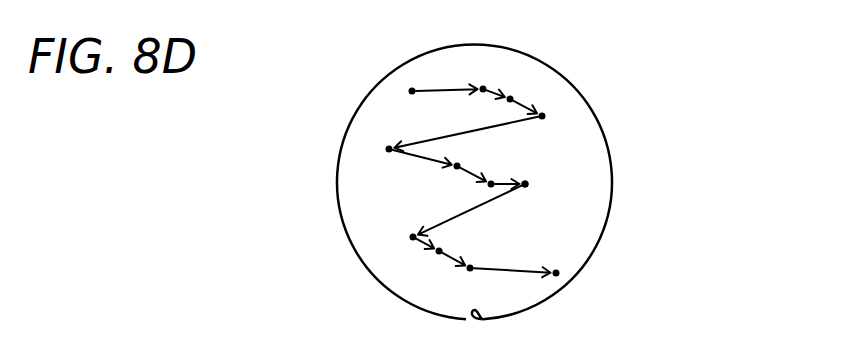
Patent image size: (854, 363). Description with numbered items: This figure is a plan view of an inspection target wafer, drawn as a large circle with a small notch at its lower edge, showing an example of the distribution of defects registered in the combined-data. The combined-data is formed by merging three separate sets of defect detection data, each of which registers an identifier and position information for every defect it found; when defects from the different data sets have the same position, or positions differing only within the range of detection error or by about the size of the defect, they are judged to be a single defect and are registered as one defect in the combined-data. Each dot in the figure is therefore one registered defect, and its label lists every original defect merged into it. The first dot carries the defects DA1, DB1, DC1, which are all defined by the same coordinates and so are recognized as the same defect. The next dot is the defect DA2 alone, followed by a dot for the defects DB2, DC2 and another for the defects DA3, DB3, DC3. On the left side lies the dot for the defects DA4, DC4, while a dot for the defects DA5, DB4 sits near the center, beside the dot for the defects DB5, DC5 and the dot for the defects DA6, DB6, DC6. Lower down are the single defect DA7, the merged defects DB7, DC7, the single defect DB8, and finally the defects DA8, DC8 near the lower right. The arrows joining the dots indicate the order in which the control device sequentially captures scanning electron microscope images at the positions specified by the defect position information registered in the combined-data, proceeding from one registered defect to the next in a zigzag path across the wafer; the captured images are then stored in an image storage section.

The defect DA1 is at (513, 52).
The defect DB1 is at (513, 52).
The defect DC1 is at (412, 91).
The defect DA2 is at (483, 89).
The defect DB2 is at (617, 82).
The defect DC2 is at (510, 99).
The defect DA3 is at (674, 107).
The defect DB3 is at (674, 107).
The defect DC3 is at (542, 116).
The defect DA4 is at (304, 149).
The defect DB4 is at (457, 166).
The defect DC4 is at (389, 149).
The defect DA5 is at (602, 149).
The defect DB5 is at (631, 184).
The defect DC5 is at (525, 184).
The defect DA6 is at (661, 211).
The defect DB6 is at (661, 211).
The defect DC6 is at (525, 184).
The defect DA7 is at (413, 237).
The defect DB7 is at (342, 259).
The defect DC7 is at (439, 251).
The defect DA8 is at (648, 288).
The defect DB8 is at (470, 268).
The defect DC8 is at (556, 273).